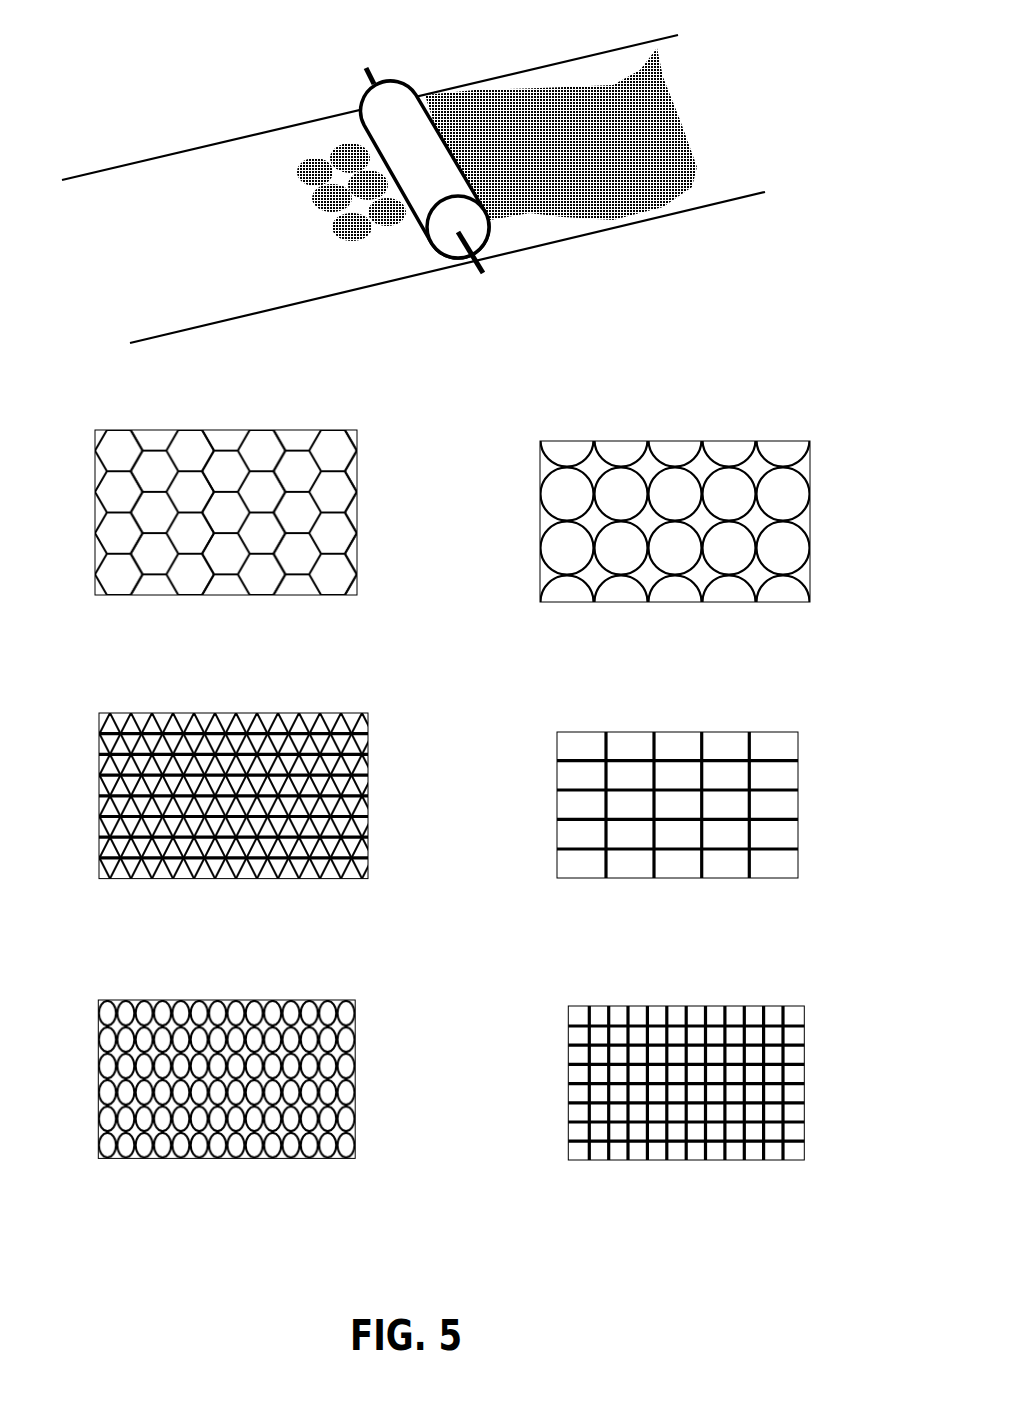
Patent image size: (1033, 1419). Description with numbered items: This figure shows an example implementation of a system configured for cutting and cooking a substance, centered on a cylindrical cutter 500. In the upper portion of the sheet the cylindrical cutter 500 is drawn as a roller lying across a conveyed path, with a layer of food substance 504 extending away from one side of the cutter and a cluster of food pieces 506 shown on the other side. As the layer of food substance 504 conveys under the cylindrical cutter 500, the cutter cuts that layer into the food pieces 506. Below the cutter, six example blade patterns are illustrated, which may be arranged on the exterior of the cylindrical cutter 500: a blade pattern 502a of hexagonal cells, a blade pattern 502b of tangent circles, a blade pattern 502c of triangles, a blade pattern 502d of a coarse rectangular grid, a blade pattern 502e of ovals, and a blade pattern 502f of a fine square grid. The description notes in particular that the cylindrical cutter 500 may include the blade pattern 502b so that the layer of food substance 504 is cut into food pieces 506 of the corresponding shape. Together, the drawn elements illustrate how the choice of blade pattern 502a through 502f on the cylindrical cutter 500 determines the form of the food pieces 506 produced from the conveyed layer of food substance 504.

The cylindrical cutter 500 is at (415, 77).
The layer of food substance 504 is at (631, 144).
The food pieces 506 is at (342, 240).
The blade pattern 502a is at (286, 428).
The blade pattern 502b is at (613, 440).
The blade pattern 502c is at (263, 712).
The blade pattern 502d is at (647, 732).
The blade pattern 502e is at (247, 998).
The blade pattern 502f is at (663, 1006).